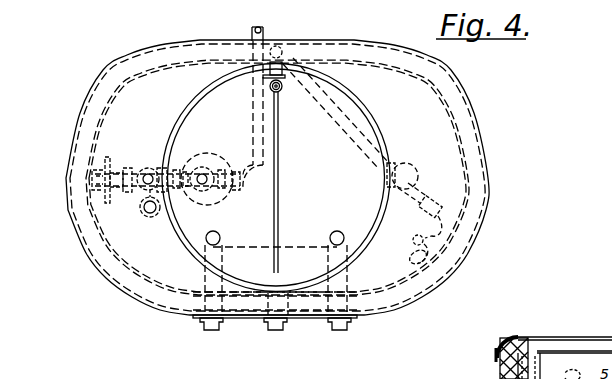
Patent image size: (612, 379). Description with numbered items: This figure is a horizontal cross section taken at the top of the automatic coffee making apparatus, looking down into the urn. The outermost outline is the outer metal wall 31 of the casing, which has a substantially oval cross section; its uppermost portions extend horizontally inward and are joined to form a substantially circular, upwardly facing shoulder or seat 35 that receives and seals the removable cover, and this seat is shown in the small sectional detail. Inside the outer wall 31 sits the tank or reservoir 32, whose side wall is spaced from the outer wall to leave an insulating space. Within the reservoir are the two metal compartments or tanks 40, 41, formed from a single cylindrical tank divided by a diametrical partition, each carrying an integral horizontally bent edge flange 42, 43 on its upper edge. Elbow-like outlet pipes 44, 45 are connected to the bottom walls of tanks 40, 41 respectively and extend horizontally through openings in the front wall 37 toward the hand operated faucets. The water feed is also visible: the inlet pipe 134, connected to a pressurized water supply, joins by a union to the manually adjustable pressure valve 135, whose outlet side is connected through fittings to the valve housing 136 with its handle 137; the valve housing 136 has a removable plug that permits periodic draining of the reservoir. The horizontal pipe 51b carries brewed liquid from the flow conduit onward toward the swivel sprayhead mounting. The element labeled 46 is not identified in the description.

The outer metal wall 31 is at (295, 177).
The pipe 51b is at (304, 42).
The edge flange 42 is at (276, 178).
The inlet pipe 134 is at (268, 31).
The edge flange 43 is at (558, 328).
The tank or reservoir 32 is at (361, 219).
The pressure valve 135 is at (174, 163).
The tank 40 is at (207, 189).
The valve housing 136 is at (147, 175).
The handle 137 is at (104, 158).
The outlet pipe 44 is at (194, 273).
The outlet pipe 45 is at (354, 273).
The front wall 37 is at (275, 303).
The mounting foot 46 is at (263, 331).
The tank 41 is at (386, 186).
The shoulder or seat 35 is at (497, 348).